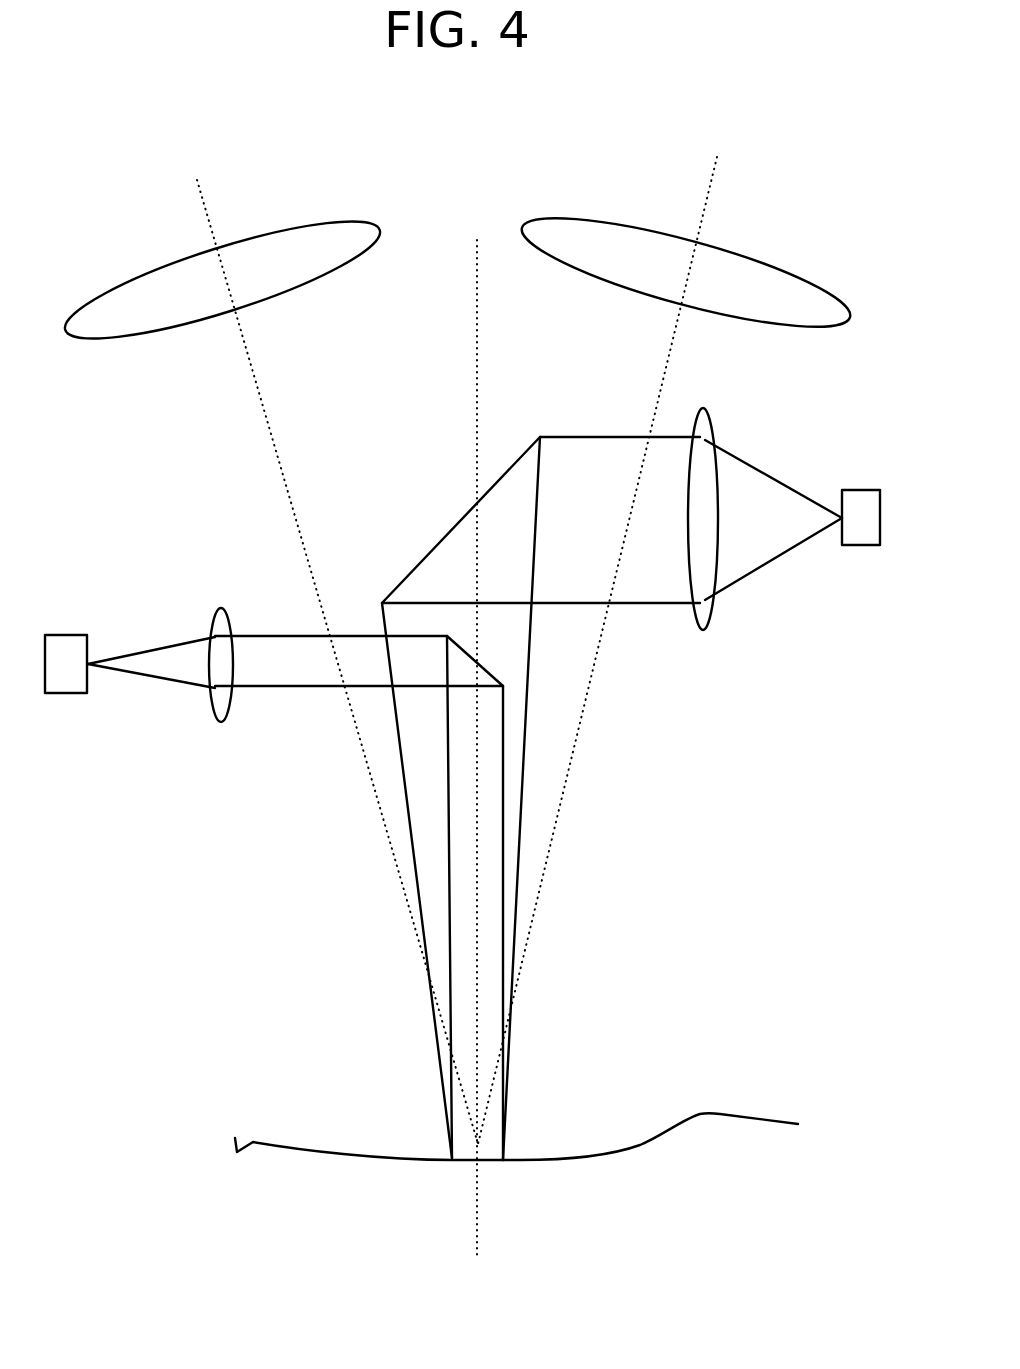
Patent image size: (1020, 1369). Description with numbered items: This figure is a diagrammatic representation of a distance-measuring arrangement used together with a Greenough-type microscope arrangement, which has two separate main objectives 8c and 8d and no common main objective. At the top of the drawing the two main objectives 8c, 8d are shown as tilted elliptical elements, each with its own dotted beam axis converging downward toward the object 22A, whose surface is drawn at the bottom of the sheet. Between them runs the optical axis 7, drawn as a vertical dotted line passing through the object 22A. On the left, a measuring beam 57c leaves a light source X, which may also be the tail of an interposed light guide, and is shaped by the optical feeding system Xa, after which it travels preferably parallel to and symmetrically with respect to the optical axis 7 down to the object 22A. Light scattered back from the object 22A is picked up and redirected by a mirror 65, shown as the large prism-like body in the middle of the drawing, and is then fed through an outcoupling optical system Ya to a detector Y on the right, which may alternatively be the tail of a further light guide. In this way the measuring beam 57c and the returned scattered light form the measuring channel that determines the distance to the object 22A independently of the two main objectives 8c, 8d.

The main objective 8c is at (343, 267).
The main objective 8d is at (797, 330).
The mirror 65 is at (433, 548).
The measuring beam 57c is at (448, 786).
The light source X is at (70, 693).
The optical feeding system Xa is at (230, 707).
The detector Y is at (860, 547).
The outcoupling optical system Ya is at (713, 615).
The optical axis 7 is at (480, 1213).
The object 22A is at (670, 1132).